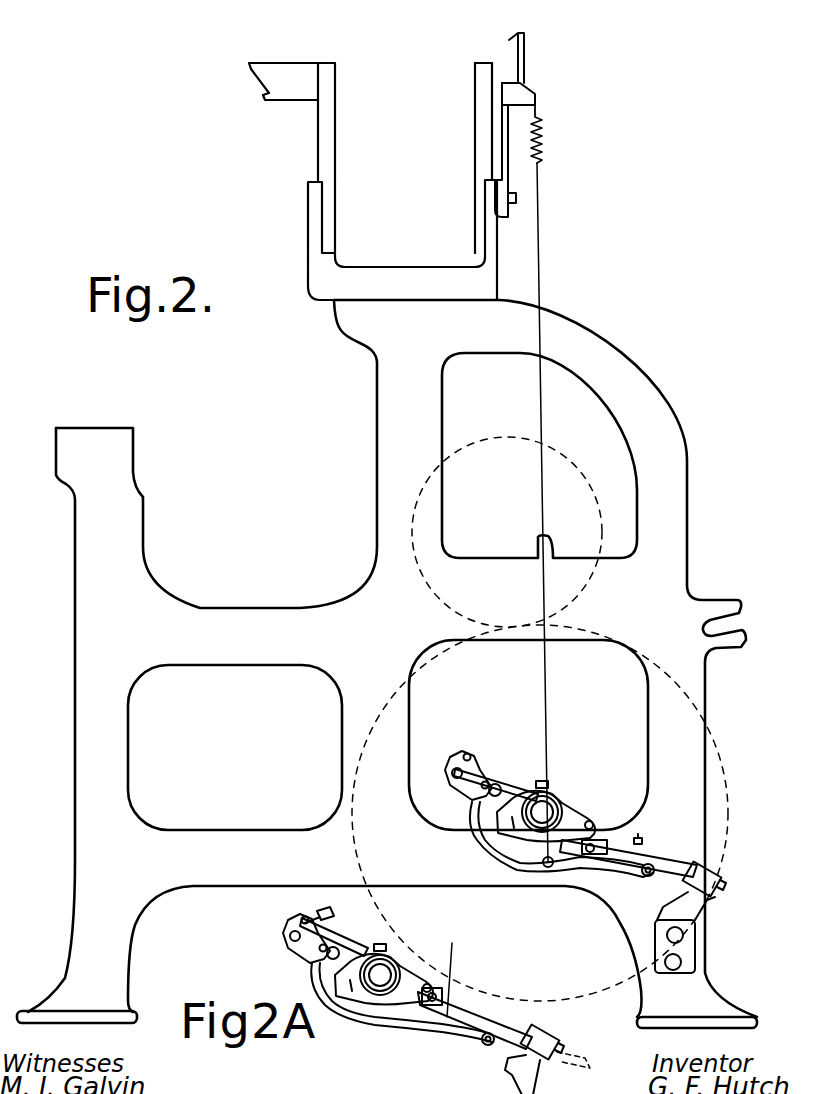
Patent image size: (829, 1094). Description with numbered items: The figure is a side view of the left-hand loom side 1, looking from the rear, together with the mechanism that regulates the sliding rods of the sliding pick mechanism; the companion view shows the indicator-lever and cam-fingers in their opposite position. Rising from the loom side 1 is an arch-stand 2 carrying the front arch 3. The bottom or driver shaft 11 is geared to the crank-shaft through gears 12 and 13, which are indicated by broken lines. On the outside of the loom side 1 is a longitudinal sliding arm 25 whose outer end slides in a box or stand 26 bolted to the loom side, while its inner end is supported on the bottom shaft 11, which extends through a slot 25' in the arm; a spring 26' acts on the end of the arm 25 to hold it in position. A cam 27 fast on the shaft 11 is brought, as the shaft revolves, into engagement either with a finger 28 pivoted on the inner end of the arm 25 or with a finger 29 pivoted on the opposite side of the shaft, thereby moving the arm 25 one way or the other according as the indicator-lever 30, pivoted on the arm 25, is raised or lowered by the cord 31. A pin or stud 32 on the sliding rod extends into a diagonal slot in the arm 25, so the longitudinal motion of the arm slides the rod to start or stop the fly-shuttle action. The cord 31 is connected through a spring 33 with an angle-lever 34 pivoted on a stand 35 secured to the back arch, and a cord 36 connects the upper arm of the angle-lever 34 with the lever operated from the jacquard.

In FIG. 2, the loom side 1 is at (670, 571).
In FIG. 2, the arch-stand 2 is at (319, 291).
In FIG. 2, the front arch 3 is at (277, 101).
In FIG. 2, the bottom shaft 11 is at (559, 803).
In FIG. 2A, the bottom shaft 11 is at (393, 969).
In FIG. 2, the gear 12 is at (586, 478).
In FIG. 2, the gear 13 is at (720, 758).
In FIG. 2, the sliding arm 25 is at (629, 857).
In FIG. 2A, the sliding arm 25 is at (483, 1020).
In FIG. 2, the slot 25' is at (497, 774).
In FIG. 2A, the slot 25' is at (341, 938).
In FIG. 2, the box or stand 26 is at (697, 932).
In FIG. 2A, the box or stand 26 is at (538, 1074).
In FIG. 2, the spring 26' is at (722, 879).
In FIG. 2A, the spring 26' is at (559, 1047).
In FIG. 2, the cam 27 is at (546, 823).
In FIG. 2A, the cam 27 is at (384, 993).
In FIG. 2, the finger 28 is at (615, 834).
In FIG. 2A, the finger 28 is at (430, 988).
In FIG. 2, the finger 29 is at (463, 777).
In FIG. 2A, the finger 29 is at (318, 931).
In FIG. 2, the indicator-lever 30 is at (561, 844).
In FIG. 2A, the indicator-lever 30 is at (401, 1007).
In FIG. 2, the cord 31 is at (482, 88).
In FIG. 2A, the cord 31 is at (461, 980).
In FIG. 2, the pin or stud 32 is at (648, 839).
In FIG. 2, the spring 33 is at (543, 143).
In FIG. 2, the angle-lever 34 is at (525, 70).
In FIG. 2, the stand 35 is at (508, 143).
In FIG. 2, the cord 36 is at (521, 27).